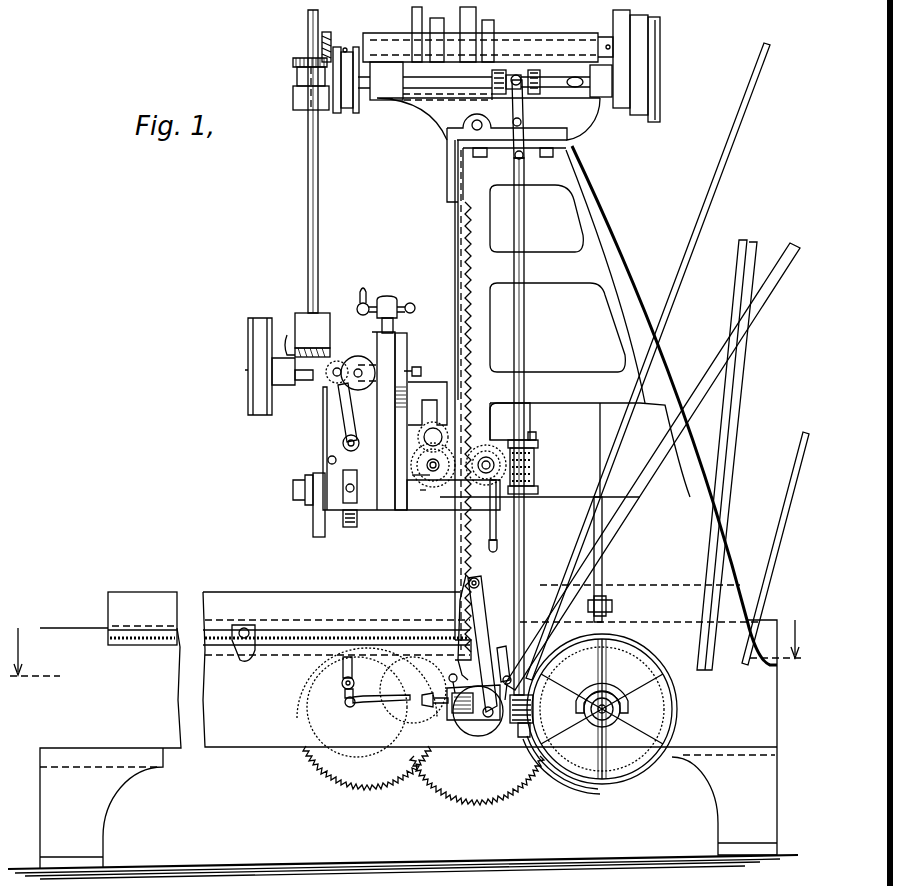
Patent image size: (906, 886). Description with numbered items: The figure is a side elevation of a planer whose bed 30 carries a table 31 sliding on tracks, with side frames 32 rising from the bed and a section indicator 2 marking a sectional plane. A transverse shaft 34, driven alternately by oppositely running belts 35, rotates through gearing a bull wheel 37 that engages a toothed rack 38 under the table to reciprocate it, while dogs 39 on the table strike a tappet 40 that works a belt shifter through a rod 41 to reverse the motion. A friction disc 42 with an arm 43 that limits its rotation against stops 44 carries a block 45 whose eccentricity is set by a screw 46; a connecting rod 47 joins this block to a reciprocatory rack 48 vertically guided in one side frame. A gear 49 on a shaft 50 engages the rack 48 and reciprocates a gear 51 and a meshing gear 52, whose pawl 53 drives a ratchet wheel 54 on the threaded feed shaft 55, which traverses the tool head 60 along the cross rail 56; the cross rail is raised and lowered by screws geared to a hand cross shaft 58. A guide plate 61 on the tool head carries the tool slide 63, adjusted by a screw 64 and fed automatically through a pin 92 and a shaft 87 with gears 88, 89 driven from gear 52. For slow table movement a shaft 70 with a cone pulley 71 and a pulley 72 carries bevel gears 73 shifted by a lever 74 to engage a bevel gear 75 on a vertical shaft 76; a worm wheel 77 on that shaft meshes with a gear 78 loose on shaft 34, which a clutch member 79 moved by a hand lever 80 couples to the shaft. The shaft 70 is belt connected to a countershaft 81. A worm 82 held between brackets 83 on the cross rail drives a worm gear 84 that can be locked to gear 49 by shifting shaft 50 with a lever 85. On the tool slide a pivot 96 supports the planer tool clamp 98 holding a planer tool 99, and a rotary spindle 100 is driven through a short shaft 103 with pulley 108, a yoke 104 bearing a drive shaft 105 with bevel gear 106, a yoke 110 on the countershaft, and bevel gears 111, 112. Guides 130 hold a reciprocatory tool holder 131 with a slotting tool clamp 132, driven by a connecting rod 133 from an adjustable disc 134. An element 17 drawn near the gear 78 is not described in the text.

The section line 2- 2 is at (407, 637).
The guard bracket 17 is at (508, 740).
The bed 30 is at (252, 750).
The table 31 is at (122, 600).
The side frames 32 is at (622, 262).
The transverse shaft 34 is at (606, 718).
The belts 35 is at (738, 185).
The bull wheel 37 is at (352, 770).
The toothed rack 38 is at (297, 618).
The dogs 39 is at (240, 662).
The tappet 40 is at (343, 668).
The rod 41 is at (398, 700).
The friction disc 42 is at (476, 736).
The extending arm 43 is at (501, 664).
The stops 44 is at (449, 676).
The block 45 is at (456, 722).
The screw 46 is at (426, 707).
The connecting rod 47 is at (482, 600).
The reciprocatory rack 48 is at (471, 548).
The gear 49 is at (510, 421).
The shaft 50 is at (479, 445).
The gear 51 is at (495, 495).
The gear 52 is at (422, 488).
The pawl 53 is at (424, 440).
The ratchet wheel 54 is at (426, 462).
The threaded feed shaft 55 is at (428, 472).
The cross rail 56 is at (447, 410).
The cross shaft 58 is at (468, 127).
The tool head 60 is at (458, 496).
The guide plate 61 is at (408, 342).
The tool slide 63 is at (380, 362).
The screw 64 is at (389, 300).
The shaft 70 is at (425, 83).
The cone pulley 71 is at (638, 118).
The pulley 72 is at (348, 113).
The bevel gears 73 is at (527, 72).
The lever 74 is at (514, 158).
The bevel gear 75 is at (494, 88).
The vertical shaft 76 is at (526, 364).
The worm wheel 77 is at (521, 716).
The gear 78 is at (602, 709).
The clutch member 79 is at (614, 697).
The hand lever 80 is at (594, 528).
The countershaft 81 is at (500, 45).
The worm 82 is at (534, 460).
The brackets 83 is at (538, 444).
The worm gear 84 is at (530, 432).
The lever 85 is at (502, 541).
The shaft 87 is at (448, 420).
The gear 88 is at (428, 490).
The gear 89 is at (420, 428).
The pin 92 is at (422, 370).
The pivot 96 is at (328, 459).
The planer tool clamp 98 is at (306, 485).
The planer tool 99 is at (313, 524).
The rotary spindle 100 is at (350, 527).
The short shaft 103 is at (248, 372).
The yoke 104 is at (295, 325).
The drive shaft 105 is at (306, 152).
The bevel gear 106 is at (300, 392).
The pulley 108 is at (258, 345).
The yoke 110 is at (297, 95).
The bevel gear 111 is at (300, 60).
The bevel gear 112 is at (329, 33).
The guides 130 is at (355, 410).
The reciprocatory tool holder 131 is at (335, 435).
The clamp 132 is at (360, 505).
The connecting rod 133 is at (340, 395).
The disc 134 is at (355, 358).